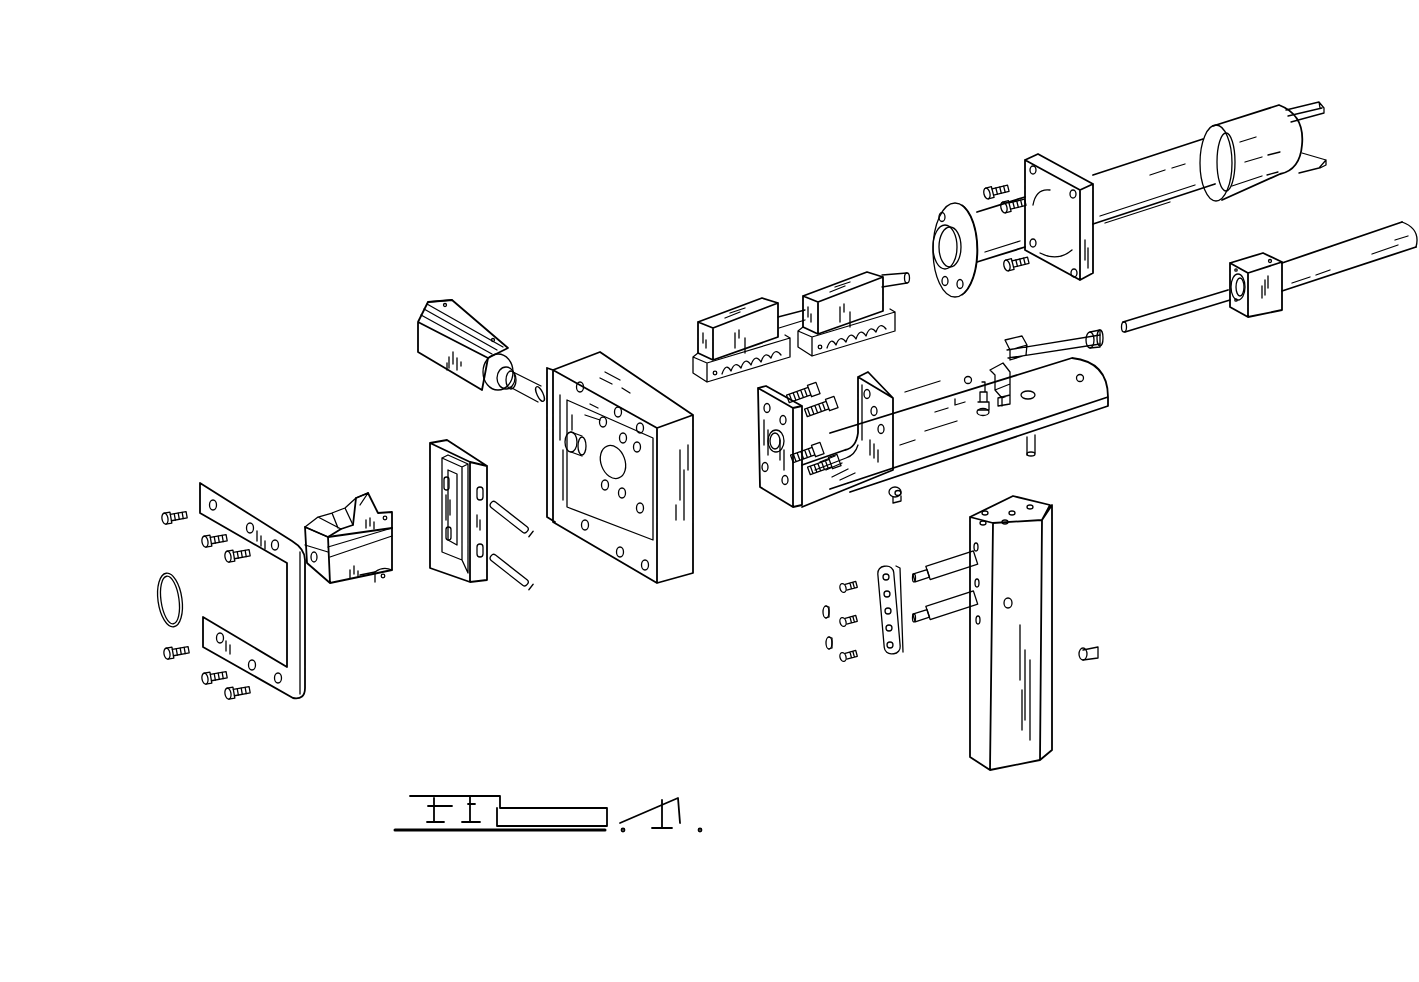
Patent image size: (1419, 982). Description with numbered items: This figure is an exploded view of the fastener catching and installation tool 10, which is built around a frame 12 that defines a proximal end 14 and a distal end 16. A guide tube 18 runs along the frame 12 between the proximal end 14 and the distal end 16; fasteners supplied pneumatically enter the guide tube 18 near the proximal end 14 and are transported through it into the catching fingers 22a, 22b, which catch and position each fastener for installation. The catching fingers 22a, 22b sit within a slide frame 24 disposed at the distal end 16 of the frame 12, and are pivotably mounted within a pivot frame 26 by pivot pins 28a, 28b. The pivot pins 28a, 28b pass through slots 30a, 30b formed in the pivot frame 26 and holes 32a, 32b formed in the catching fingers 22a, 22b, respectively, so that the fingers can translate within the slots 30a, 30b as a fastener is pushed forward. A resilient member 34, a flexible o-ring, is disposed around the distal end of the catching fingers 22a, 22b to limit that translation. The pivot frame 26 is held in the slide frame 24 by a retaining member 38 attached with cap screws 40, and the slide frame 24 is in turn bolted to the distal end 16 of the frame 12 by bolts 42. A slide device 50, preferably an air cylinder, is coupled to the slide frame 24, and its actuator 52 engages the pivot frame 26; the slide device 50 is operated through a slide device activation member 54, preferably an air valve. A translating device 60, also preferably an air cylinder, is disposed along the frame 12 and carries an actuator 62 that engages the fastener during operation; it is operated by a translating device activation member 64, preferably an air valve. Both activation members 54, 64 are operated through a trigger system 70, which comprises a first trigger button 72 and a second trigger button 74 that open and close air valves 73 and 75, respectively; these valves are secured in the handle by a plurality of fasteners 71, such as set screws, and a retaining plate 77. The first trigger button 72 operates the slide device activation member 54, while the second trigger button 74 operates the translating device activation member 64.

The fastener catching and installation tool 10 is at (816, 156).
The frame 12 is at (988, 450).
The proximal end 14 is at (1112, 392).
The distal end 16 is at (770, 505).
The guide tube 18 is at (1130, 174).
The catching finger 22a is at (306, 522).
The catching finger 22b is at (333, 586).
The slide frame 24 is at (685, 572).
The pivot frame 26 is at (468, 530).
The pivot pin 28a is at (530, 537).
The pivot pin 28b is at (530, 591).
The slot 30a is at (445, 465).
The slot 30b is at (452, 534).
The hole 32a is at (388, 508).
The hole 32b is at (384, 582).
The resilient member 34 is at (183, 601).
The retaining member 38 is at (285, 690).
The cap screws 40 is at (168, 526).
The bolts 42 is at (838, 400).
The slide device 50 is at (487, 324).
The actuator 52 is at (533, 380).
The slide device activation member 54 is at (697, 358).
The translating device 60 is at (1359, 262).
The actuator 62 is at (1200, 308).
The translating device activation member 64 is at (897, 321).
The trigger system 70 is at (887, 684).
The fasteners 71 is at (852, 620).
The first trigger button 72 is at (826, 651).
The air valve 73 is at (948, 633).
The second trigger button 74 is at (820, 613).
The air valve 75 is at (947, 566).
The retaining plate 77 is at (892, 567).